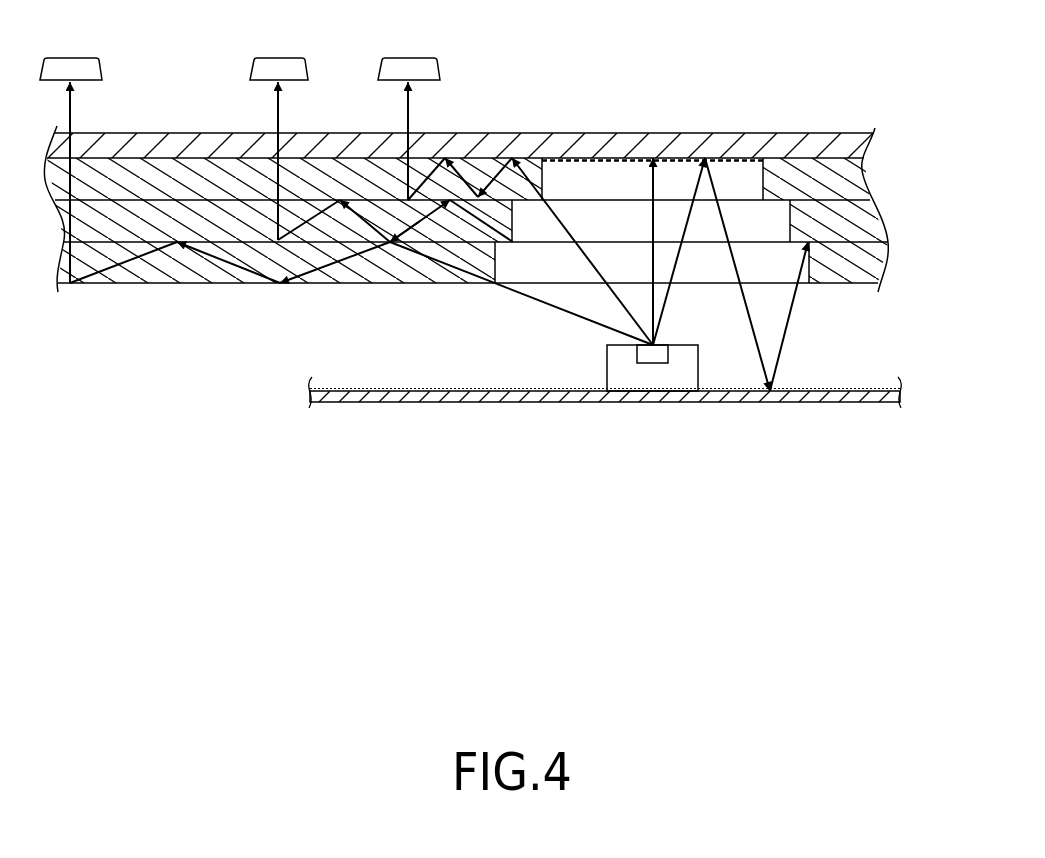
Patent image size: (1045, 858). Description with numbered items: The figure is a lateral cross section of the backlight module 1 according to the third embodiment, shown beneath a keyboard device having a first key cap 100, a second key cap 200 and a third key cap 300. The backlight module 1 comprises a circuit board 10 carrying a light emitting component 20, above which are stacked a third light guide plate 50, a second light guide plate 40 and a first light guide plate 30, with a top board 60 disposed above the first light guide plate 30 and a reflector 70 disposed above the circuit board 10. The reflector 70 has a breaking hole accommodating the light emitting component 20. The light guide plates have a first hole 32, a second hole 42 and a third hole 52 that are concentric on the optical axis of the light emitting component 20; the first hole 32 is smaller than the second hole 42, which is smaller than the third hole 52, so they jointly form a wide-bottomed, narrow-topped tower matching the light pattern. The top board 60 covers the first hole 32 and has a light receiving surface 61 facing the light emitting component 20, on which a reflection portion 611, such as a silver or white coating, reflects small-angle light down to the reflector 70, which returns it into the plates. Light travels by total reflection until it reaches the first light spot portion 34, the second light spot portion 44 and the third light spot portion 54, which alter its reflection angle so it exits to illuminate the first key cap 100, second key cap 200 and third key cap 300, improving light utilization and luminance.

The backlight module 1 is at (160, 386).
The circuit board 10 is at (540, 398).
The light emitting component 20 is at (660, 378).
The first light guide plate 30 is at (857, 178).
The first hole 32 is at (615, 170).
The first light spot portion 34 is at (408, 193).
The second light guide plate 40 is at (870, 218).
The second hole 42 is at (677, 207).
The second light spot portion 44 is at (275, 230).
The third light guide plate 50 is at (865, 262).
The third hole 52 is at (710, 287).
The third light spot portion 54 is at (72, 285).
The top board 60 is at (488, 133).
The light receiving surface 61 is at (788, 158).
The reflection portion 611 is at (553, 158).
The reflector 70 is at (438, 389).
The first key cap 100 is at (428, 63).
The second key cap 200 is at (285, 63).
The third key cap 300 is at (73, 63).